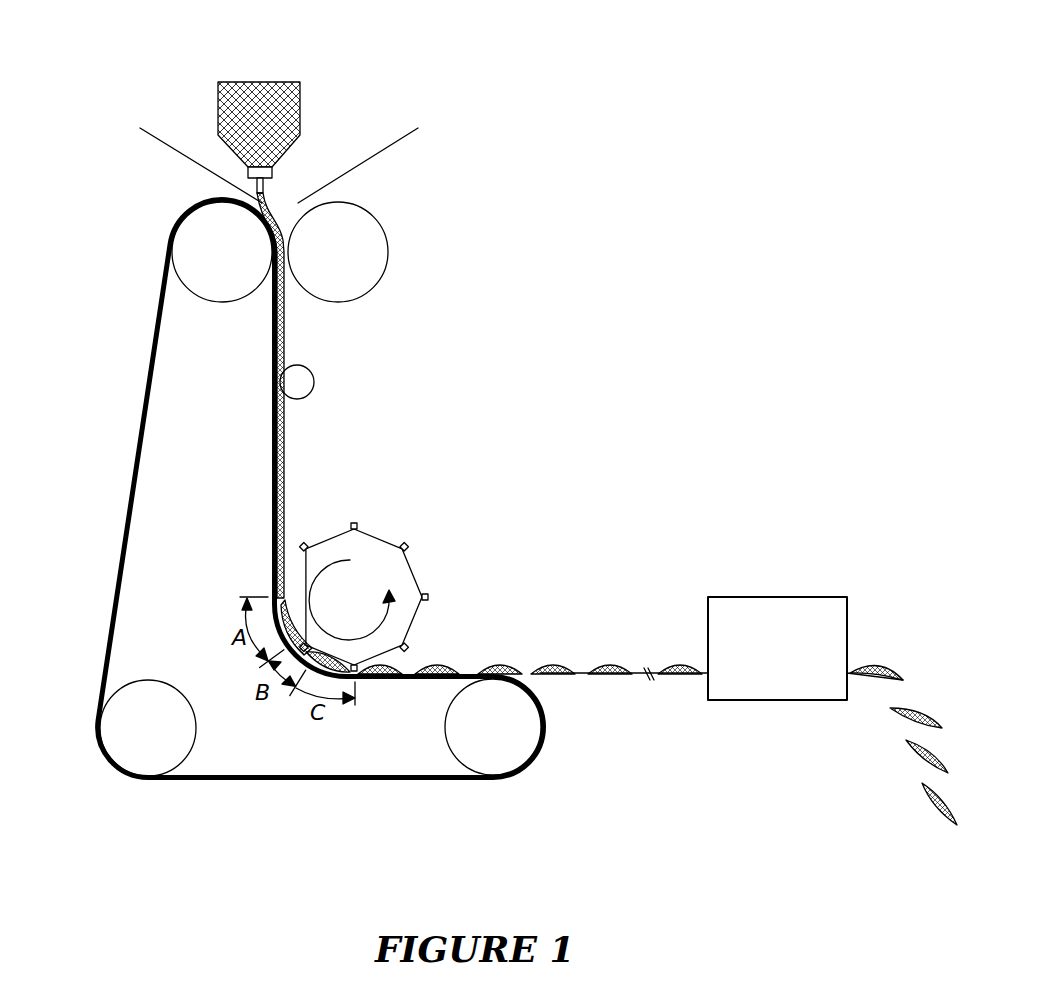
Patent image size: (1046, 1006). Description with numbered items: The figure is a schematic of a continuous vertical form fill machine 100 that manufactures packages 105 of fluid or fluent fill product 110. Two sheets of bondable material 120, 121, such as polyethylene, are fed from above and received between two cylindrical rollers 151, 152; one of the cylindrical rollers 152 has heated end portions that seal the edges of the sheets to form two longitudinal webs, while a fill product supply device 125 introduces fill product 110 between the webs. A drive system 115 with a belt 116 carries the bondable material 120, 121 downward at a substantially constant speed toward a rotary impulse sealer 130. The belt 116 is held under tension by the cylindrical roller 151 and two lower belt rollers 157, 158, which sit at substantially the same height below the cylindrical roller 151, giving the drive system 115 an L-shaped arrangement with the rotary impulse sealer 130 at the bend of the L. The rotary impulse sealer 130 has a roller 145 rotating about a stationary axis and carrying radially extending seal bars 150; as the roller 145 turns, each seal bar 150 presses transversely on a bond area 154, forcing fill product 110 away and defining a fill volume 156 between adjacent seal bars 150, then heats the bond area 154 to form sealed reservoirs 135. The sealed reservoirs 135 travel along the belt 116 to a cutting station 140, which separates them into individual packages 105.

The continuous vertical form fill machine 100 is at (678, 285).
The packages 105 is at (913, 653).
The fill product 110 is at (280, 423).
The drive system 115 is at (127, 298).
The belt 116 is at (135, 452).
The sheet of bondable material 120 is at (160, 140).
The sheet of bondable material 121 is at (393, 137).
The fill product supply device 125 is at (300, 108).
The rotary impulse sealer 130 is at (450, 497).
The sealed reservoirs 135 is at (345, 652).
The cutting station 140 is at (788, 607).
The roller 145 is at (403, 577).
The seal bars 150 is at (402, 542).
The cylindrical roller 151 is at (200, 225).
The cylindrical roller 152 is at (368, 267).
The bond area 154 is at (290, 593).
The fill volume 156 is at (285, 592).
The belt roller 157 is at (147, 762).
The belt roller 158 is at (492, 767).